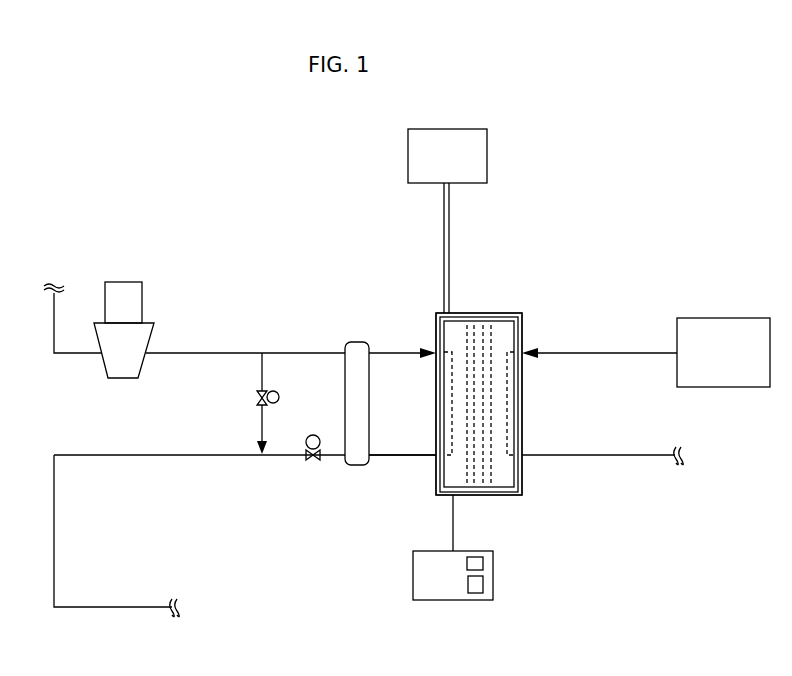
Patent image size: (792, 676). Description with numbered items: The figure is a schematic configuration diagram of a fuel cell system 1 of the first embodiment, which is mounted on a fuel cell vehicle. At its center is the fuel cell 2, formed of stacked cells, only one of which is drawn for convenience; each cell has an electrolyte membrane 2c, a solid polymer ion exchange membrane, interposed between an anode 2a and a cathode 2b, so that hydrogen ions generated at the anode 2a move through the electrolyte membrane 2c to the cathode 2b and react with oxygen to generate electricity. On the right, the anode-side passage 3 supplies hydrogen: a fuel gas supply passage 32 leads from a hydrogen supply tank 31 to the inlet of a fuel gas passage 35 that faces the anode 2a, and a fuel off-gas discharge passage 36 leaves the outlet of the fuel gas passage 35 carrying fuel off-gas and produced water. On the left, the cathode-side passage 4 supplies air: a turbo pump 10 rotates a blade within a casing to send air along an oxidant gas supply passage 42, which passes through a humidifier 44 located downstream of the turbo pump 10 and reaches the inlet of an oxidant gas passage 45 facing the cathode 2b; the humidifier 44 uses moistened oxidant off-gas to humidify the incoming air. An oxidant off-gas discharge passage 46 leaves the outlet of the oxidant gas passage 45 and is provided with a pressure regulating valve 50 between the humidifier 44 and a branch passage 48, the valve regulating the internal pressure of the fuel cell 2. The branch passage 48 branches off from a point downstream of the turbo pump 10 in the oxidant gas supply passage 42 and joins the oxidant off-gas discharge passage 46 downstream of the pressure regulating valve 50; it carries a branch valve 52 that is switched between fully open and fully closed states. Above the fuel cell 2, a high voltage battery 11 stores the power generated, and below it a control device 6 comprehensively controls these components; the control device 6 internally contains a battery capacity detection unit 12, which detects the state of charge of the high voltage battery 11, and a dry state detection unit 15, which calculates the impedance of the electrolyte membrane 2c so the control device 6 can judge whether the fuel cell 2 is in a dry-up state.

The fuel cell system 1 is at (108, 148).
The fuel cell 2 is at (540, 305).
The anode 2a is at (500, 313).
The cathode 2b is at (469, 320).
The electrolyte membrane 2c is at (482, 318).
The anode-side passage 3 is at (648, 318).
The cathode-side passage 4 is at (302, 320).
The control device 6 is at (451, 601).
The turbo pump 10 is at (126, 262).
The high voltage battery 11 is at (447, 135).
The battery capacity detection unit 12 is at (484, 563).
The dry state detection unit 15 is at (484, 586).
The hydrogen supply tank 31 is at (727, 378).
The fuel gas supply passage 32 is at (606, 350).
The fuel gas passage 35 is at (517, 407).
The fuel off-gas discharge passage 36 is at (597, 458).
The oxidant gas supply passage 42 is at (397, 352).
The humidifier 44 is at (358, 342).
The oxidant gas passage 45 is at (442, 402).
The oxidant off-gas discharge passage 46 is at (398, 457).
The branch passage 48 is at (261, 424).
The pressure regulating valve 50 is at (316, 460).
The branch valve 52 is at (257, 398).